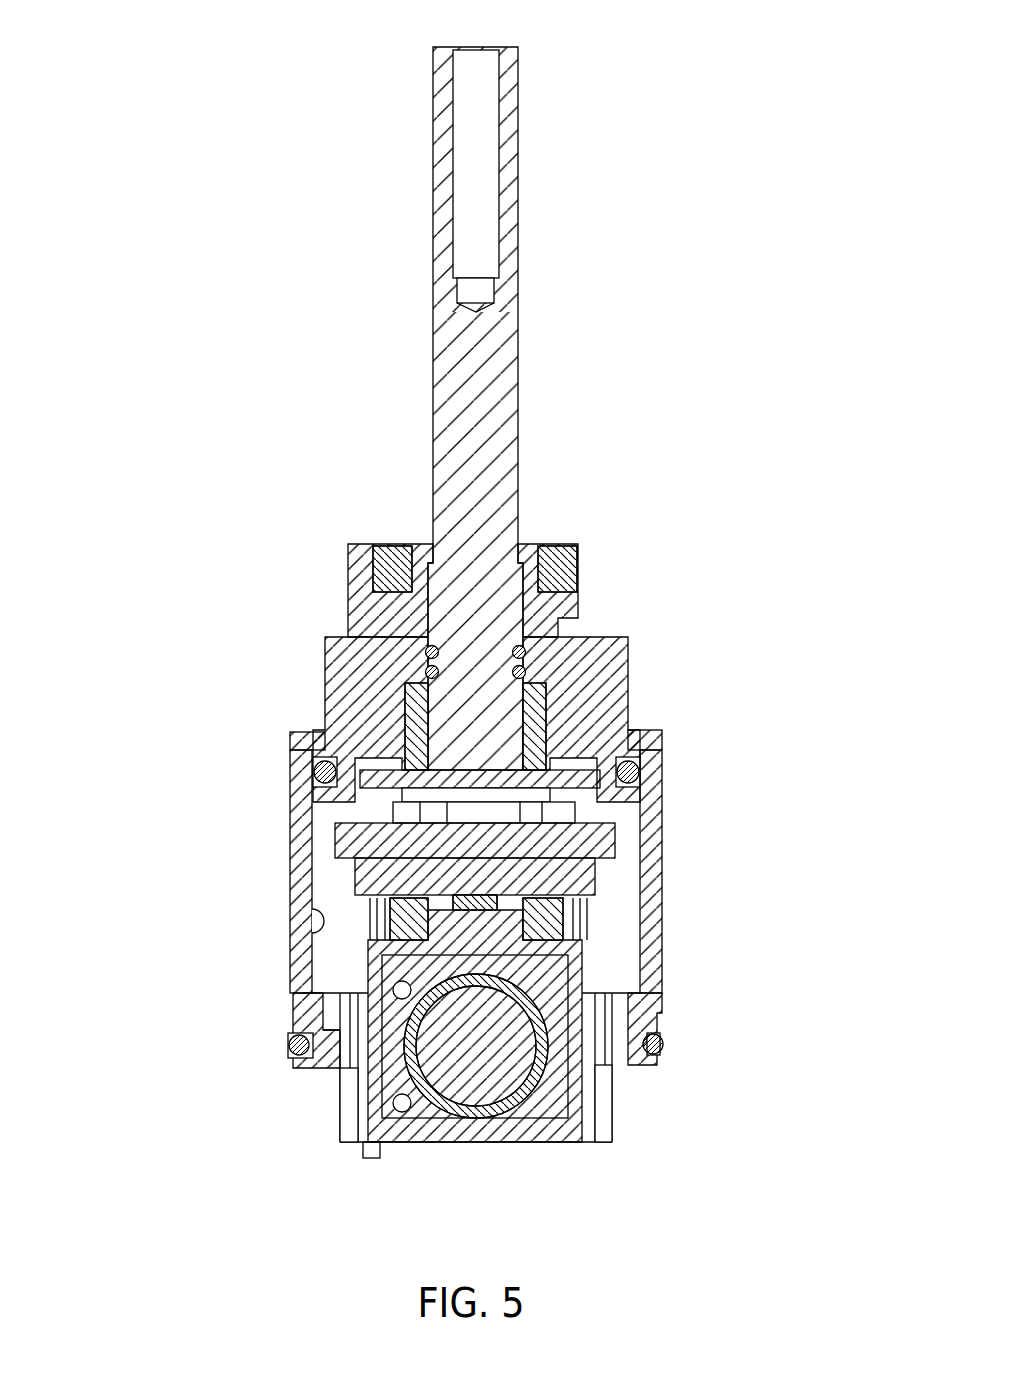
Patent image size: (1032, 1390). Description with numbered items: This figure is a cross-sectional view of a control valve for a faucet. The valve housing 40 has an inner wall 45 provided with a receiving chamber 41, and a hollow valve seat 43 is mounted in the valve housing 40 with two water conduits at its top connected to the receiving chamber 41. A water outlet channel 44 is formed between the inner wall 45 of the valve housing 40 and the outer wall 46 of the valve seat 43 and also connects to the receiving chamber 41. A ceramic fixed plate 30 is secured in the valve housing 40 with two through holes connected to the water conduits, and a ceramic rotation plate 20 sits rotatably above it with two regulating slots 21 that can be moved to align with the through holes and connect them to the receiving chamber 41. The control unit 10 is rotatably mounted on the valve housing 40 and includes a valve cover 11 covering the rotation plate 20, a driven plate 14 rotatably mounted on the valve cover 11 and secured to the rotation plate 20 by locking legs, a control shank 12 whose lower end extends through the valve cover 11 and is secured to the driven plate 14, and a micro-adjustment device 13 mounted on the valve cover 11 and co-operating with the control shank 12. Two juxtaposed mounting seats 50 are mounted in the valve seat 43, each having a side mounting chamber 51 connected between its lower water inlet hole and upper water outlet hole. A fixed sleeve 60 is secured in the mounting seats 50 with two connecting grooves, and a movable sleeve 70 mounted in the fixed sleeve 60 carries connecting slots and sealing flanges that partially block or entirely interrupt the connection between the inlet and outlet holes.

The control unit 10 is at (417, 178).
The valve cover 11 is at (628, 637).
The control shank 12 is at (460, 410).
The micro-adjustment device 13 is at (567, 537).
The driven plate 14 is at (370, 752).
The rotation plate 20 is at (340, 829).
The regulating slots 21 is at (290, 790).
The fixed plate 30 is at (320, 908).
The valve housing 40 is at (668, 758).
The receiving chamber 41 is at (617, 895).
The hollow valve seat 43 is at (303, 995).
The water outlet channel 44 is at (292, 1040).
The inner wall 45 is at (308, 922).
The outer wall 46 is at (305, 1068).
The mounting seats 50 is at (418, 1138).
The mounting chamber 51 is at (643, 998).
The fixed sleeve 60 is at (413, 1063).
The movable sleeve 70 is at (540, 1050).